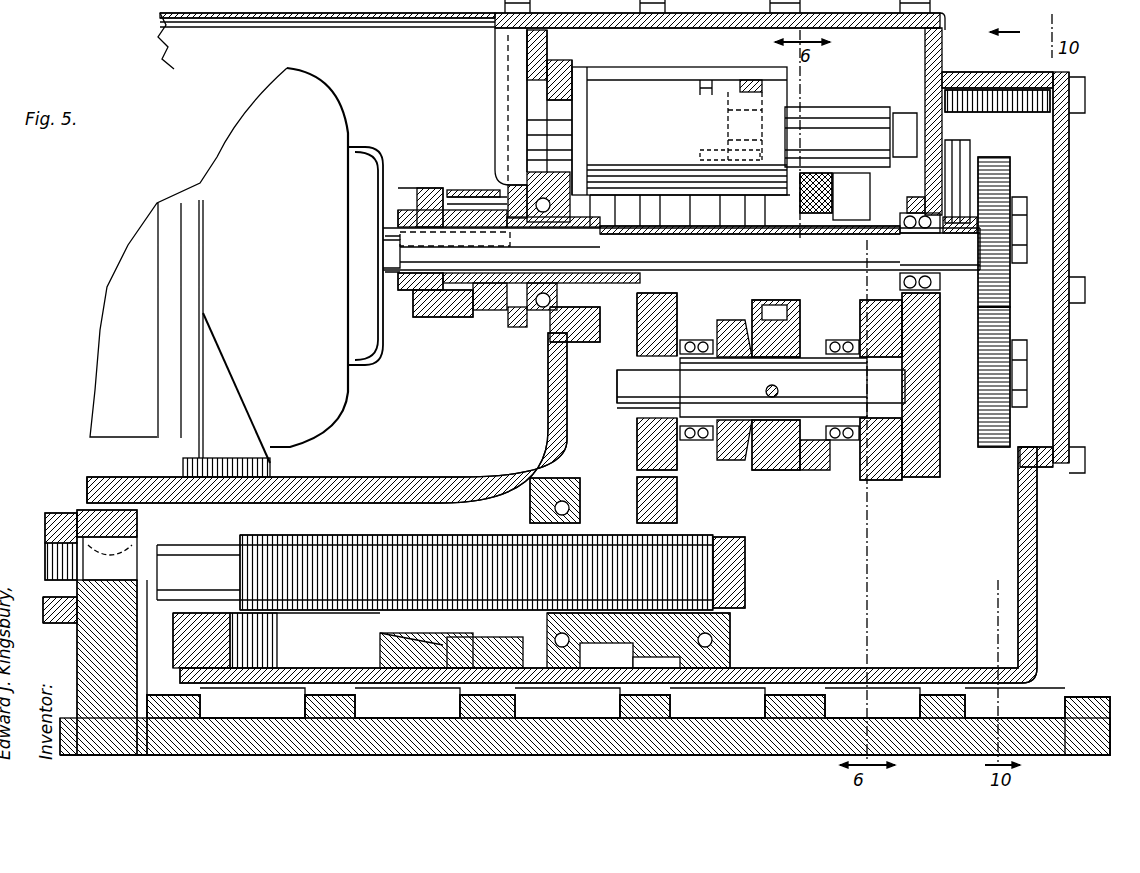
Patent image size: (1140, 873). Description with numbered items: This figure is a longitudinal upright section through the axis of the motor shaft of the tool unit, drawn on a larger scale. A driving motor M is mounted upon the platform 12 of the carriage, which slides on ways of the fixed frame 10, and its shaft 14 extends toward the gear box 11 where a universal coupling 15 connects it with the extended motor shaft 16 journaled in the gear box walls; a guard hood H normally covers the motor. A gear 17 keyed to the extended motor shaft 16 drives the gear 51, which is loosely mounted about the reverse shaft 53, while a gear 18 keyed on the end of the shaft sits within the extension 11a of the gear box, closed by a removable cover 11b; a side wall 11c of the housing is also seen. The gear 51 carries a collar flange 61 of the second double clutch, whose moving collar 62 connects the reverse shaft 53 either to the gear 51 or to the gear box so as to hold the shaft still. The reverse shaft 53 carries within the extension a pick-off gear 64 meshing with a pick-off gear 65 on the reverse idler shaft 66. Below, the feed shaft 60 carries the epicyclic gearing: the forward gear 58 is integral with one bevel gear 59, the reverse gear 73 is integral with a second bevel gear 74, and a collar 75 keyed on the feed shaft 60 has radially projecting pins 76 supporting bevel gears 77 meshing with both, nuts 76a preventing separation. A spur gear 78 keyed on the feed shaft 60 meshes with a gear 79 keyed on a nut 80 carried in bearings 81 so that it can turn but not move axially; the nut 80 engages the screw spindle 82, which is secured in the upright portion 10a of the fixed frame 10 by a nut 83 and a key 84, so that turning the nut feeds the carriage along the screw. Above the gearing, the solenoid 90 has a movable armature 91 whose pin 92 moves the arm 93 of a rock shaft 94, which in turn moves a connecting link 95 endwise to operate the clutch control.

The guard hood H is at (348, 27).
The driving motor M is at (236, 272).
The fixed frame 10 is at (282, 745).
The upright portion of fixed frame 10a is at (92, 512).
The gear box 11 is at (478, 62).
The gear box extension 11a is at (998, 72).
The removable cover 11b is at (1062, 147).
The housing side wall 11c is at (942, 30).
The platform 12 is at (415, 477).
The motor shaft 14 is at (375, 262).
The universal coupling 15 is at (482, 320).
The extended motor shaft 16 is at (681, 249).
The gear 17 is at (851, 196).
The gear 18 is at (925, 195).
The gear 51 is at (828, 192).
The reverse shaft 53 is at (1027, 232).
The forward gear 58 is at (858, 478).
The bevel gear 59 is at (815, 470).
The feed shaft 60 is at (761, 387).
The collar flange 61 is at (771, 378).
The moving collar 62 is at (643, 198).
The pick-off gear 64 is at (1000, 192).
The pick-off gear 65 is at (1000, 340).
The reverse idler shaft 66 is at (1027, 368).
The reverse gear 73 is at (671, 375).
The bevel gear 74 is at (760, 470).
The collar 75 is at (768, 410).
The radially projecting pins 76 is at (716, 379).
The nuts 76a is at (796, 234).
The bevel gears 77 is at (864, 381).
The spur gear 78 is at (640, 306).
The gear 79 is at (637, 492).
The nut 80 is at (620, 613).
The bearings 81 is at (528, 508).
The screw spindle 82 is at (400, 548).
The nut 83 is at (68, 512).
The key 84 is at (112, 508).
The solenoid 90 is at (634, 96).
The movable armature 91 is at (800, 125).
The pin 92 is at (745, 126).
The arm 93 is at (714, 161).
The rock shaft 94 is at (706, 82).
The connecting link 95 is at (754, 80).